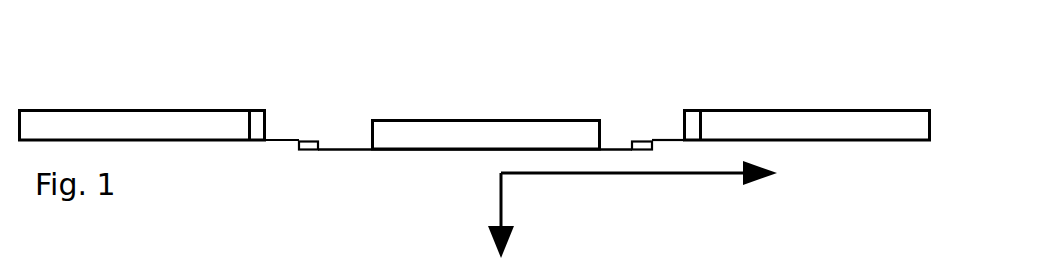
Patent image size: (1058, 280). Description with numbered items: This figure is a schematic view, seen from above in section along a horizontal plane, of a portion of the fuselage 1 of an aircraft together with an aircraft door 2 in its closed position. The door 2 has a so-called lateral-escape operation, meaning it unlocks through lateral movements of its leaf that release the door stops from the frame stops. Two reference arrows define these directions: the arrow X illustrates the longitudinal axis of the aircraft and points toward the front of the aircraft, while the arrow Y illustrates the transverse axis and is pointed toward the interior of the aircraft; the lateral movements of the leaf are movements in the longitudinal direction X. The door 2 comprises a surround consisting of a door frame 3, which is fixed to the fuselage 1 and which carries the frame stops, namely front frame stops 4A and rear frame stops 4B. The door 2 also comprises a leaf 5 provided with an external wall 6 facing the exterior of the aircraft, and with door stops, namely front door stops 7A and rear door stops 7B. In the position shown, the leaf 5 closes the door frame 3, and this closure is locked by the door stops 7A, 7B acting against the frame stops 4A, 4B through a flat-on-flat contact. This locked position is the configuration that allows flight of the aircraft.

The fuselage 1 is at (108, 128).
The door 2 is at (520, 94).
The door frame 3 is at (255, 122).
The front frame stops 4A is at (653, 142).
The rear frame stops 4B is at (285, 143).
The leaf 5 is at (475, 130).
The external wall 6 is at (540, 119).
The front door stops 7A is at (640, 151).
The rear door stops 7B is at (305, 150).
The longitudinal axis X is at (657, 175).
The transverse axis Y is at (500, 187).